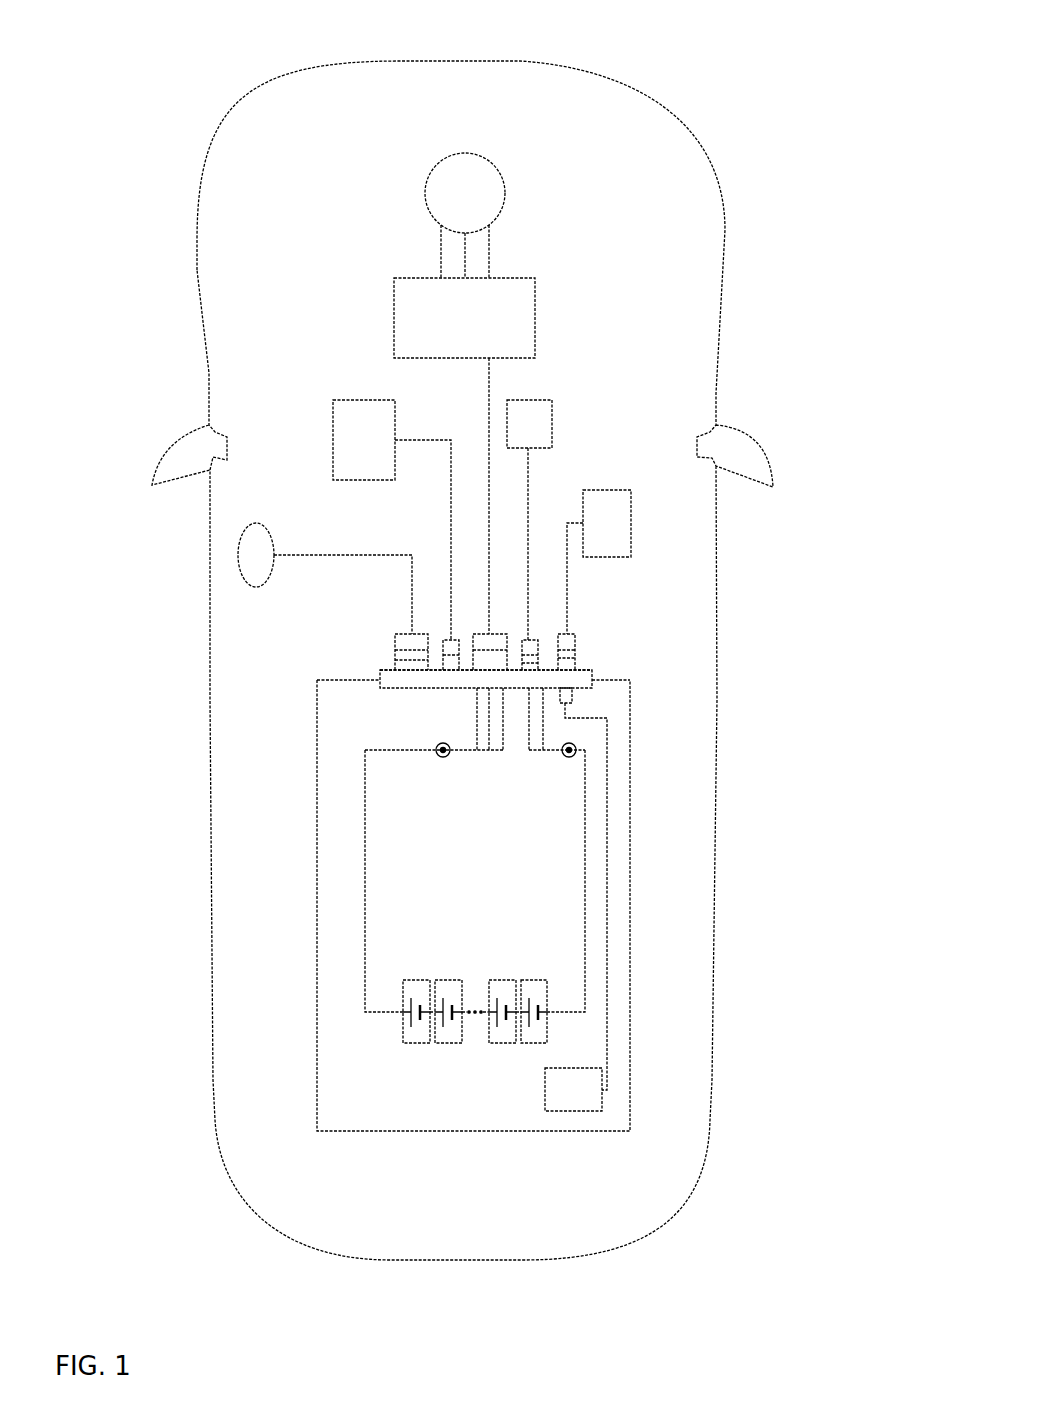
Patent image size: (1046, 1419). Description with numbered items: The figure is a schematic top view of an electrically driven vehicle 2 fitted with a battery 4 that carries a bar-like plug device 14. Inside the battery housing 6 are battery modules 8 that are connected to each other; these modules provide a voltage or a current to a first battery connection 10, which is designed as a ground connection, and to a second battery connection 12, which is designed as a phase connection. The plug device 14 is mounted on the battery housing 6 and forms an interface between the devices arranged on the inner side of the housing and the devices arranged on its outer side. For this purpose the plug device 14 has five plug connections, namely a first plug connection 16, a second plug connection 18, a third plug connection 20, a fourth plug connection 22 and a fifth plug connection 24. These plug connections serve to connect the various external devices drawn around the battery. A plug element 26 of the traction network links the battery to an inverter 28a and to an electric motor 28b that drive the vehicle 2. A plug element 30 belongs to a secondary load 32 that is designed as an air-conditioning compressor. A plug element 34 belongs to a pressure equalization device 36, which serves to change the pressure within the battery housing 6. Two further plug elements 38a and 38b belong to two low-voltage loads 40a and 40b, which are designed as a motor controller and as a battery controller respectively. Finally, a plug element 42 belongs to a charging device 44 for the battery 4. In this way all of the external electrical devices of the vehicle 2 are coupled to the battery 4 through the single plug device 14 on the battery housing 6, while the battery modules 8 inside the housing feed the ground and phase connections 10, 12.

The vehicle 2 is at (733, 63).
The battery 4 is at (338, 1100).
The battery housing 6 is at (317, 1050).
The battery modules 8 is at (502, 1044).
The first battery connection 10 is at (569, 750).
The second battery connection 12 is at (443, 751).
The plug device 14 is at (337, 659).
The first plug connection 16 is at (473, 663).
The second plug connection 18 is at (385, 669).
The third plug connection 20 is at (533, 663).
The fourth plug connection 22 is at (572, 657).
The fifth plug connection 24 is at (393, 660).
The plug element 26 is at (498, 633).
The inverter 28a is at (535, 313).
The electric motor 28b is at (505, 190).
The plug element 30 is at (445, 662).
The secondary load 32 is at (332, 433).
The plug element 34 is at (535, 642).
The pressure equalization device 36 is at (551, 427).
The plug element 38a is at (573, 633).
The plug element 38b is at (573, 695).
The low-voltage load 40a is at (630, 527).
The low-voltage load 40b is at (600, 1100).
The plug element 42 is at (404, 635).
The charging device 44 is at (240, 555).